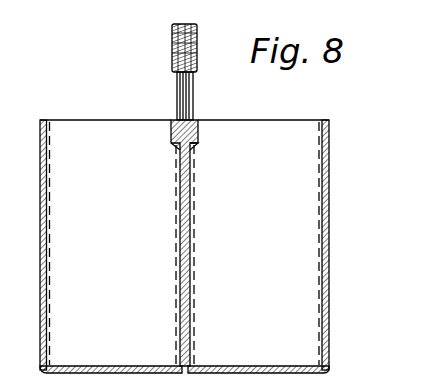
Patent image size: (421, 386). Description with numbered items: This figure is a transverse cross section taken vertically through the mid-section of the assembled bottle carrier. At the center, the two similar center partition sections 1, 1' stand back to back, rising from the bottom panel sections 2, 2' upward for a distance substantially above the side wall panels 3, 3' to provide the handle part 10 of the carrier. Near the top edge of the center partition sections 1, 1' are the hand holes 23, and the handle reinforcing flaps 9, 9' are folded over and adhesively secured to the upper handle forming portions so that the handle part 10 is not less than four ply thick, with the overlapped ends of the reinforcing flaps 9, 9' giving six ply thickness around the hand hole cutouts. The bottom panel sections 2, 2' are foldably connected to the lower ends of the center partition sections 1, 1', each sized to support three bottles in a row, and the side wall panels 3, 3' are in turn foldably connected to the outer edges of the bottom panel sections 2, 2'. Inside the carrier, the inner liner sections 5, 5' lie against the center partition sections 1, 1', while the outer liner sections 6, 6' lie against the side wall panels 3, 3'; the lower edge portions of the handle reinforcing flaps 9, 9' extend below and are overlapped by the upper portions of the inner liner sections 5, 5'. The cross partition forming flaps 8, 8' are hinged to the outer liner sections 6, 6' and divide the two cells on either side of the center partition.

The handle part 10 is at (165, 32).
The handle reinforcing flap 9 is at (156, 49).
The handle reinforcing flap 9' is at (205, 26).
The center partition section 1 is at (157, 211).
The center partition section 1' is at (211, 132).
The hand hole 23 is at (197, 97).
The cross partition forming flap 8 is at (112, 229).
The cross partition forming flap 8' is at (256, 229).
The side wall panel 3 is at (29, 245).
The side wall panel 3' is at (343, 245).
The outer liner section 6 is at (70, 243).
The outer liner section 6' is at (293, 243).
The inner liner section 5 is at (151, 255).
The inner liner section 5' is at (214, 255).
The bottom panel section 2 is at (111, 355).
The bottom panel section 2' is at (258, 355).